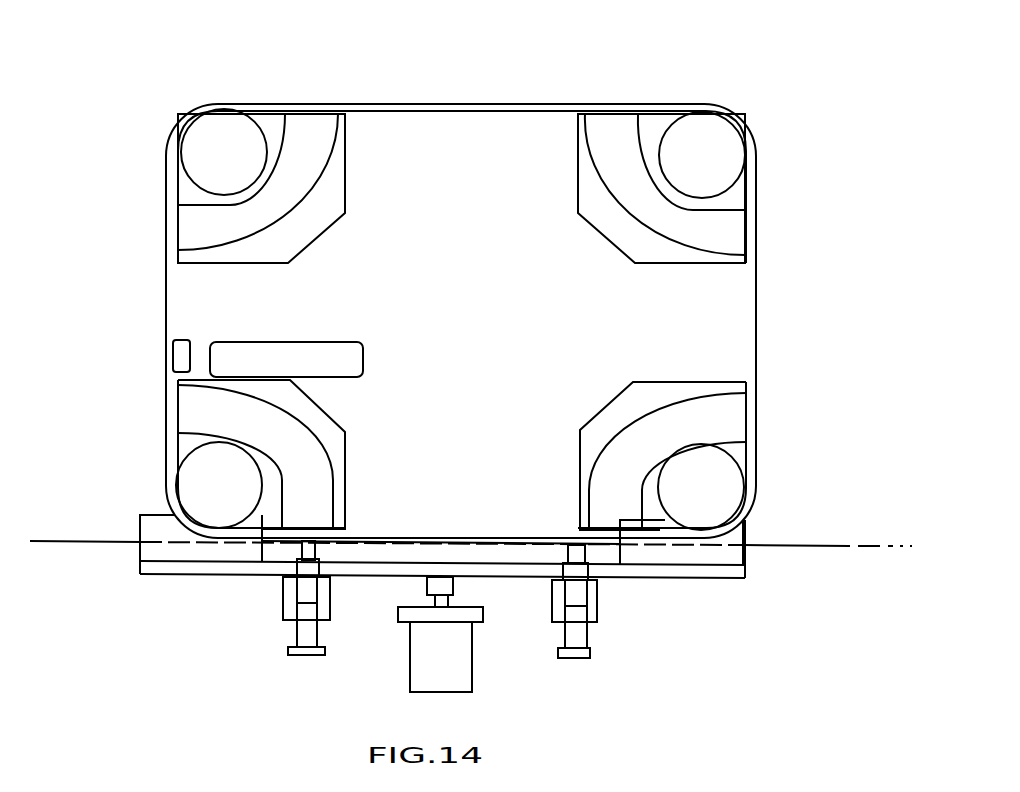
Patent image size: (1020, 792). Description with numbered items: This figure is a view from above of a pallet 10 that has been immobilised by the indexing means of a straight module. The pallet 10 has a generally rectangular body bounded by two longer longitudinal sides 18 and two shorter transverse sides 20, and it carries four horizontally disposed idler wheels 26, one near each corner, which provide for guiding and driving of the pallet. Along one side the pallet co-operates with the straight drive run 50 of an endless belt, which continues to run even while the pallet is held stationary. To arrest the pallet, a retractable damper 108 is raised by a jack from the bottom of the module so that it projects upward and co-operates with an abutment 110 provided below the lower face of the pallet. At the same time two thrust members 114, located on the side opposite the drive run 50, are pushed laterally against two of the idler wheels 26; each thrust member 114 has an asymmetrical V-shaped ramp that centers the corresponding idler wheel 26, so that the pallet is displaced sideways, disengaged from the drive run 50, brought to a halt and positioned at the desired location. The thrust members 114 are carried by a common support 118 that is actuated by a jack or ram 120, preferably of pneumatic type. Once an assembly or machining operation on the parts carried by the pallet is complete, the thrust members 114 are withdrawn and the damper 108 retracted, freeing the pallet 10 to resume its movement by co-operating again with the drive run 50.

The pallet 10 is at (522, 107).
The longitudinal sides 18 is at (392, 103).
The transverse sides 20 is at (167, 293).
The idler wheels 26 is at (221, 133).
The drive run 50 is at (793, 550).
The damper 108 is at (330, 357).
The abutment 110 is at (177, 358).
The thrust members 114 is at (201, 546).
The common support 118 is at (447, 562).
The jack or ram 120 is at (458, 667).